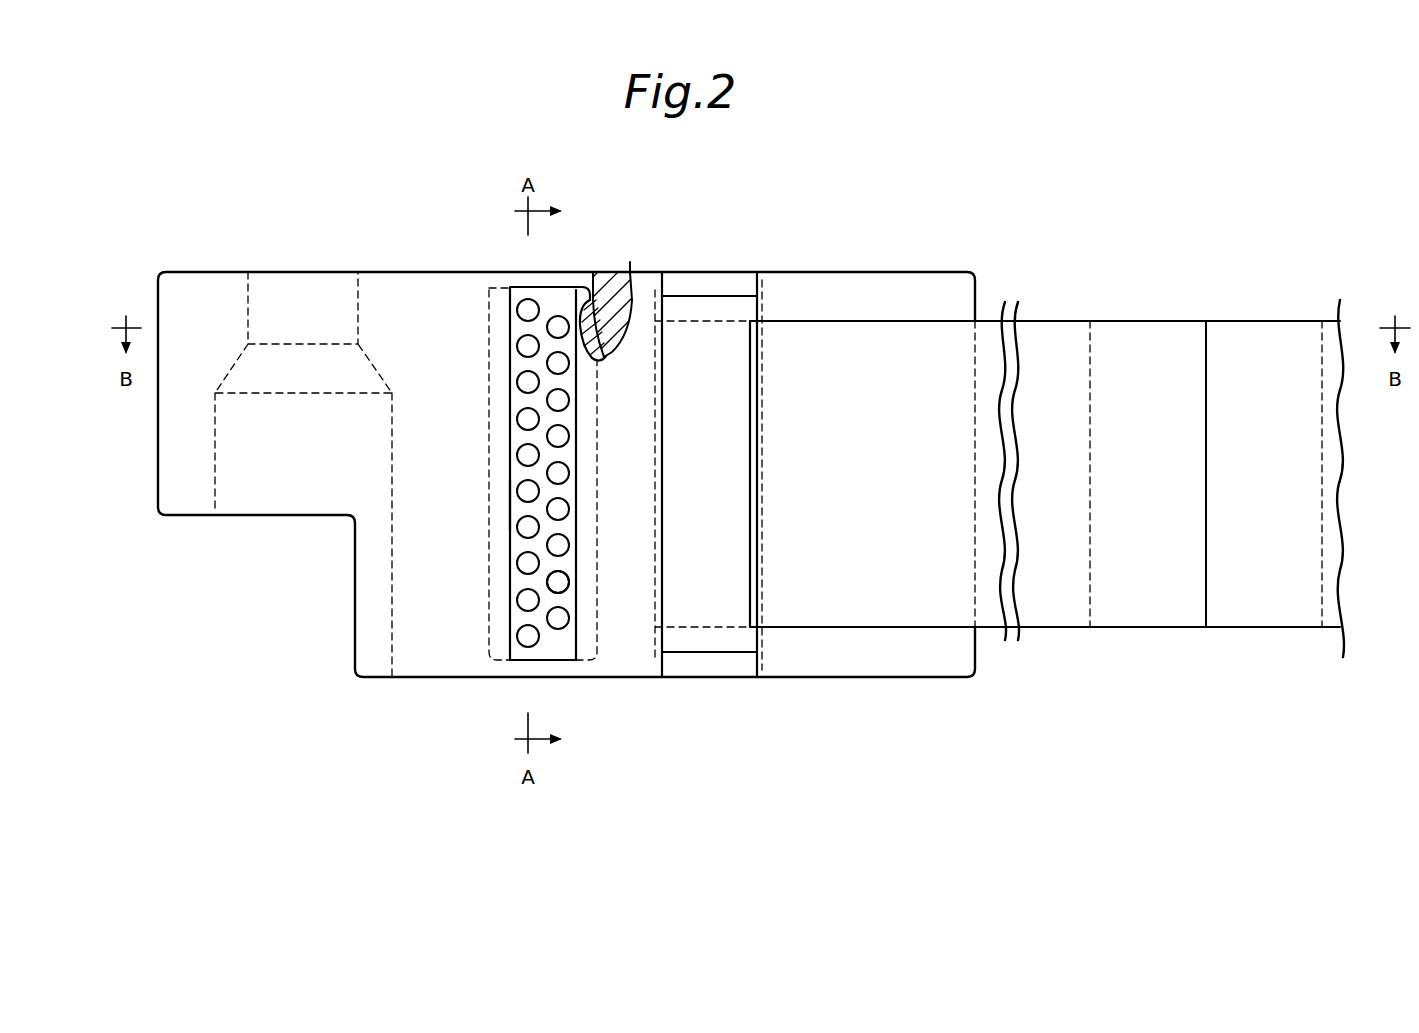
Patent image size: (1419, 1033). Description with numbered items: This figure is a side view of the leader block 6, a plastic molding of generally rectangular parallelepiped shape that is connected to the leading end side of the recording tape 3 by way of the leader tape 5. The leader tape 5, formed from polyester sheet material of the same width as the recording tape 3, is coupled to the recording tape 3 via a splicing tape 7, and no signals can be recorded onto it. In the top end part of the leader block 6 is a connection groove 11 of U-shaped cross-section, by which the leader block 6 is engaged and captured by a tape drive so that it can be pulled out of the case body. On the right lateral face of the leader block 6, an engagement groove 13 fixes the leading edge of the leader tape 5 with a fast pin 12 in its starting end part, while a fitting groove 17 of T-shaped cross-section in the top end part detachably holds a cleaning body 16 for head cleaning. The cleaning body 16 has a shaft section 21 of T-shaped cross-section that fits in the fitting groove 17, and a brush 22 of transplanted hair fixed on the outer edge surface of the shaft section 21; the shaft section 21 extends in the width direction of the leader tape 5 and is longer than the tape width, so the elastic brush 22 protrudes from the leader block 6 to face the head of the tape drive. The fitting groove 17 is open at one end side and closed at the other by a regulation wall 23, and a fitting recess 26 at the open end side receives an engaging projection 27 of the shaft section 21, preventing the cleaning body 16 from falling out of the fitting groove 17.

The recording tape 3 is at (1280, 597).
The leader tape 5 is at (945, 603).
The leader block 6 is at (433, 262).
The splicing tape 7 is at (1085, 365).
The connection groove 11 is at (250, 302).
The fast pin 12 is at (710, 300).
The engagement groove 13 is at (663, 610).
The cleaning body 16 is at (500, 505).
The fitting groove 17 is at (558, 582).
The shaft section 21 is at (520, 437).
The brush 22 is at (566, 437).
The regulation wall 23 is at (530, 667).
The fitting recess 26 is at (586, 300).
The engaging projection 27 is at (604, 345).